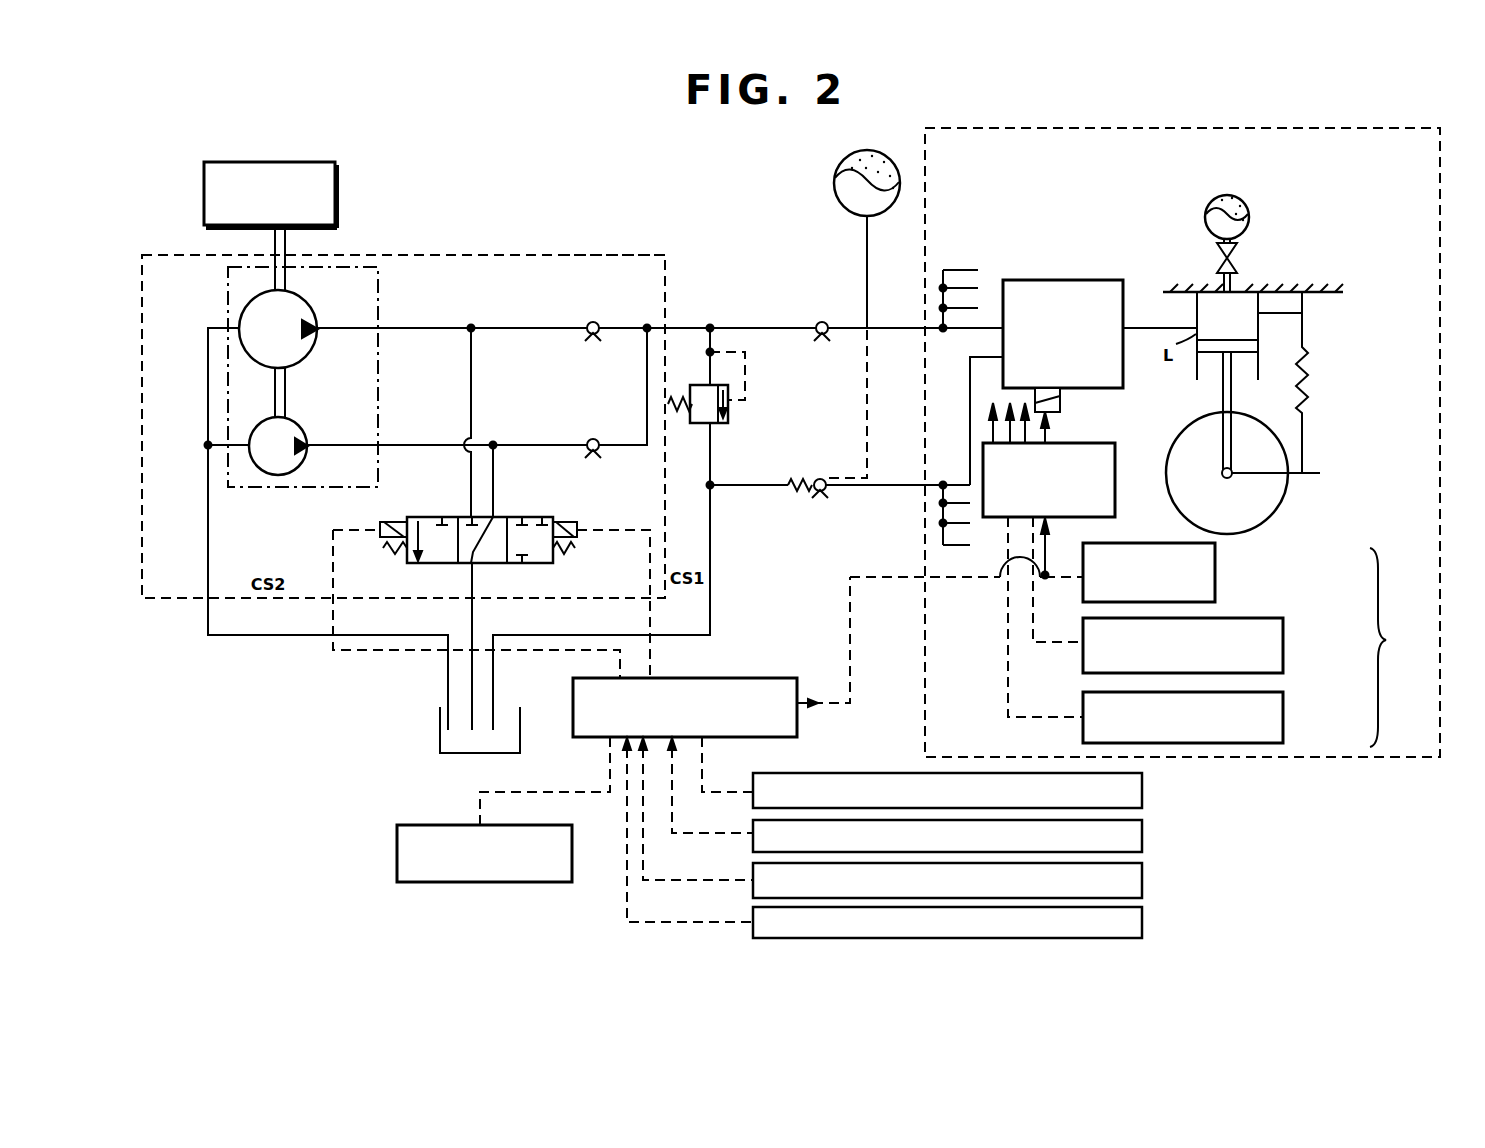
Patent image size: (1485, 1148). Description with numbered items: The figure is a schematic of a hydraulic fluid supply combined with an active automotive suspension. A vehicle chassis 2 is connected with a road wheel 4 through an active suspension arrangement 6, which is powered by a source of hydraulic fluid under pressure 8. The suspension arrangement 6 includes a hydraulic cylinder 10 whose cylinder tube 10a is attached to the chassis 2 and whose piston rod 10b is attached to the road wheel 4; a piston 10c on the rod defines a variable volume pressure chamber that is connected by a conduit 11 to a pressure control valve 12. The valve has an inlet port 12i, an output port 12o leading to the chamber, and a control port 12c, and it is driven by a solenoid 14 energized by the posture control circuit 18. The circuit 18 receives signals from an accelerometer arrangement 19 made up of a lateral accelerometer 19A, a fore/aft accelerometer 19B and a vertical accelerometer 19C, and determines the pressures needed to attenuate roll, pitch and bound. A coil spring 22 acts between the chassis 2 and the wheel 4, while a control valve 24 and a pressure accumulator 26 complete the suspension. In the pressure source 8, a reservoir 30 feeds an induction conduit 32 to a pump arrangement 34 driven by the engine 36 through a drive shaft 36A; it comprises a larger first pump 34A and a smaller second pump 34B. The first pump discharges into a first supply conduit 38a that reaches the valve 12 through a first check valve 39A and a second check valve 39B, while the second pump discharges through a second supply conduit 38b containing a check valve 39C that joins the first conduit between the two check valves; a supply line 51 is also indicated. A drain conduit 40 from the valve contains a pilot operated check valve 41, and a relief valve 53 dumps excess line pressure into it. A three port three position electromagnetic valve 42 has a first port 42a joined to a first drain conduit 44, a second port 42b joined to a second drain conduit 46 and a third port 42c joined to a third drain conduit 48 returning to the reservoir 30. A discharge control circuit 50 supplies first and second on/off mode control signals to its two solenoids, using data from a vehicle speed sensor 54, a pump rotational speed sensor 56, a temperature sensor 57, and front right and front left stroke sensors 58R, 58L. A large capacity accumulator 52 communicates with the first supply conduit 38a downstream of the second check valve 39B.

The vehicle chassis 2 is at (1320, 294).
The road wheel 4 is at (1280, 505).
The active suspension arrangement 6 is at (1110, 127).
The source of hydraulic fluid under pressure 8 is at (531, 206).
The hydraulic cylinder 10 is at (1185, 370).
The cylinder tube 10a is at (1267, 314).
The piston rod 10b is at (1233, 398).
The piston 10c is at (1258, 347).
The conduit 11 is at (1144, 323).
The pressure control valve 12 is at (1044, 280).
The inlet port 12i is at (1002, 331).
The port 12o is at (1002, 358).
The control port 12c is at (1123, 338).
The proportional solenoid 14 is at (1060, 405).
The posture control circuit 18 is at (1116, 468).
The acceleration sensors 19 is at (1391, 647).
The accelerometer 19A is at (1215, 583).
The accelerometer 19B is at (1283, 638).
The accelerometer 19C is at (1283, 705).
The coil spring 22 is at (1309, 402).
The control valve 24 is at (1218, 256).
The pressure accumulator 26 is at (1245, 204).
The tank or reservoir 30 is at (439, 722).
The induction conduit 32 is at (208, 505).
The pump arrangement 34 is at (318, 265).
The first pump 34A is at (306, 312).
The second pump 34B is at (306, 428).
The engine 36 is at (311, 162).
The drive shaft 36A is at (273, 245).
The first supply conduit 38a is at (498, 326).
The second supply conduit 38b is at (514, 440).
The first check valve 39A is at (594, 320).
The second check valve 39B is at (814, 320).
The second check valve 39C is at (592, 435).
The drain conduit 40 is at (741, 487).
The operate check valve 41 is at (816, 492).
The electromagnetic valve 42 is at (555, 564).
The first port 42a is at (468, 516).
The second port 42b is at (500, 512).
The third drain port 42c is at (467, 566).
The first drain conduit 44 is at (469, 392).
The second drain conduit 46 is at (494, 493).
The third drain conduit 48 is at (471, 620).
The discharge control circuit 50 is at (762, 678).
The pressure supply line 51 is at (564, 250).
The accumulator 52 is at (835, 182).
The relief valve 53 is at (728, 426).
The vehicle speed sensor 54 is at (1142, 880).
The pump rotational speed sensor 56 is at (422, 825).
The temperature sensor 57 is at (1142, 922).
The front right stroke sensor 58R is at (1142, 790).
The front left stroke sensor 58L is at (1142, 835).